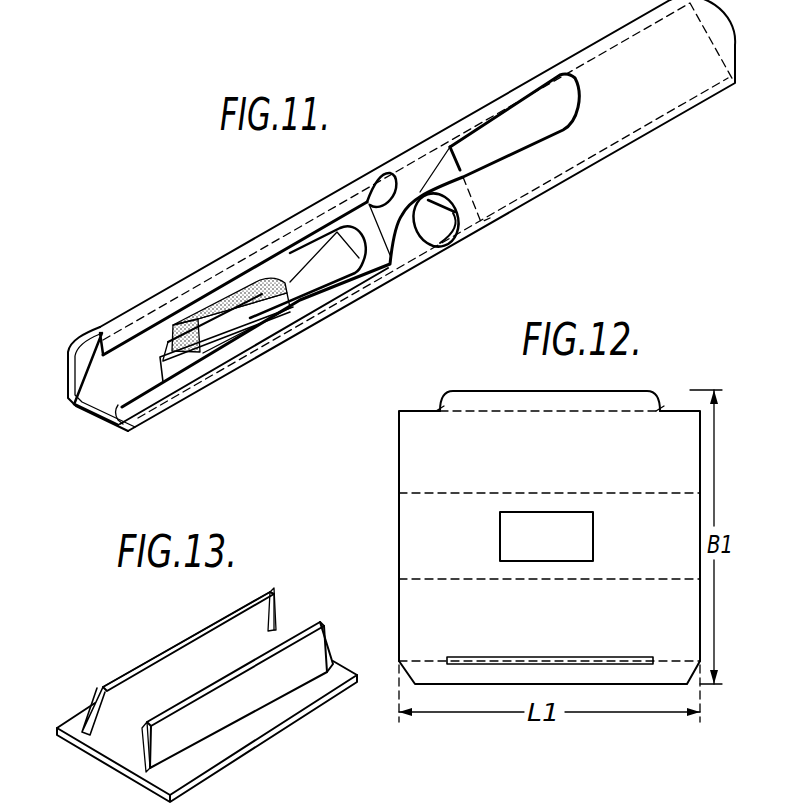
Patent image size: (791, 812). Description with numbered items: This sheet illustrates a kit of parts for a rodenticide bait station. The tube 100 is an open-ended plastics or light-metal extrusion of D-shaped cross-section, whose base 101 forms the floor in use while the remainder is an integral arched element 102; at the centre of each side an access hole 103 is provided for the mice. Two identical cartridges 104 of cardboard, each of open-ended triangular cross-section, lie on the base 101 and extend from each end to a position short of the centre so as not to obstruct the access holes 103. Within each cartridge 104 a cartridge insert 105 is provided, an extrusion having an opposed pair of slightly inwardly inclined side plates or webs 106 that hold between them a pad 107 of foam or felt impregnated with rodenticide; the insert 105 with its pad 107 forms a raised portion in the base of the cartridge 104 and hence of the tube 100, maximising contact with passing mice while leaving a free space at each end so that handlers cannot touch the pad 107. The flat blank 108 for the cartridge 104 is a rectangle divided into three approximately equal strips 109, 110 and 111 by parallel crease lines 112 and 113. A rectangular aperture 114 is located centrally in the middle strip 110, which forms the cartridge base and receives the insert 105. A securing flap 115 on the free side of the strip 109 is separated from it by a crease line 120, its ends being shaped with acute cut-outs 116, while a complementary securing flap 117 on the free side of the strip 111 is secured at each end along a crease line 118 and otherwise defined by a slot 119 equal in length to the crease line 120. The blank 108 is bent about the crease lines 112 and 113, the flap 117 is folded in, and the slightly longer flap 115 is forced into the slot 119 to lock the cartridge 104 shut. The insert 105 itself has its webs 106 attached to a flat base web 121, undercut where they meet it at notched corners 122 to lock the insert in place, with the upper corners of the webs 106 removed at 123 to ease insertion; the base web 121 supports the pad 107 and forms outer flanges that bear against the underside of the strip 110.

In FIG. 11, the tube 100 is at (341, 192).
In FIG. 11, the base 101 is at (110, 425).
In FIG. 11, the arched element 102 is at (618, 123).
In FIG. 11, the access hole 103 is at (380, 188).
In FIG. 11, the cartridge 104 is at (270, 343).
In FIG. 11, the cartridge insert 105 is at (170, 340).
In FIG. 13, the cartridge insert 105 is at (108, 675).
In FIG. 11, the side plates or webs 106 is at (170, 353).
In FIG. 13, the side plates or webs 106 is at (170, 663).
In FIG. 11, the pad 107 is at (203, 308).
In FIG. 12, the blank 108 is at (399, 522).
In FIG. 12, the strip 109 is at (572, 464).
In FIG. 12, the middle strip 110 is at (650, 554).
In FIG. 12, the strip 111 is at (580, 632).
In FIG. 12, the crease line 112 is at (583, 491).
In FIG. 12, the crease line 113 is at (457, 580).
In FIG. 12, the rectangular aperture 114 is at (522, 512).
In FIG. 12, the securing flap 115 is at (487, 397).
In FIG. 12, the acute cut-outs 116 is at (440, 408).
In FIG. 12, the complementary securing flap 117 is at (487, 680).
In FIG. 12, the crease line 118 is at (422, 660).
In FIG. 12, the slot 119 is at (592, 657).
In FIG. 12, the crease line 120 is at (478, 415).
In FIG. 13, the base web 121 is at (230, 765).
In FIG. 13, the undercut corners 122 is at (334, 663).
In FIG. 13, the removed upper corners 123 is at (270, 597).